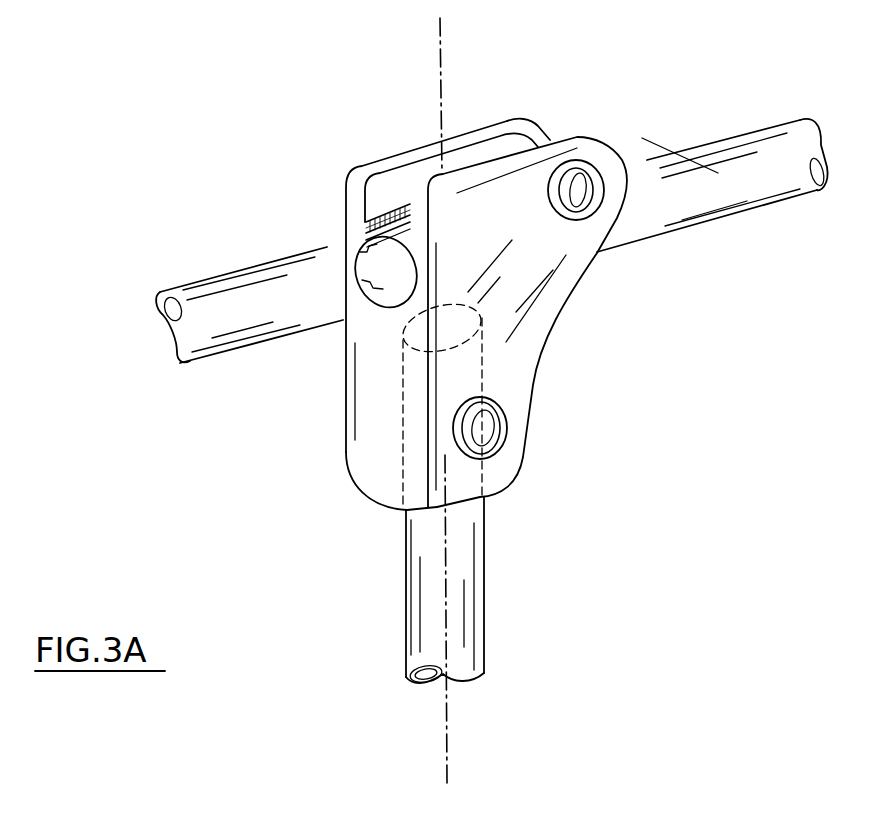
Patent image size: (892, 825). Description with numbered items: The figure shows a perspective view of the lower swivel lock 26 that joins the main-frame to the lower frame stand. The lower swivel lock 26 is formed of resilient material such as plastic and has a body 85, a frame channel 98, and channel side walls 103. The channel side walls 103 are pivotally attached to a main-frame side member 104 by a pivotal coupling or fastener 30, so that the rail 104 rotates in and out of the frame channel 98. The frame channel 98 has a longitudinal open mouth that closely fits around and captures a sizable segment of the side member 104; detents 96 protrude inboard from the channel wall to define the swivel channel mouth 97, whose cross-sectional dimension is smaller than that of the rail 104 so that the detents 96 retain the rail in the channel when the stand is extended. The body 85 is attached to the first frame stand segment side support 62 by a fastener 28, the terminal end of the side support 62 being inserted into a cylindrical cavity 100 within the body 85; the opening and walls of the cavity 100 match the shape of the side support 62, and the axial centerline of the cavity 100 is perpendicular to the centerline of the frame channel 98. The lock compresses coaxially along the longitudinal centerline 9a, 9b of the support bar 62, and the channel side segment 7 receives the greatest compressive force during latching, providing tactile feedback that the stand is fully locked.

The channel side segment 7 is at (380, 288).
The longitudinal centerline 9a is at (438, 62).
The longitudinal centerline 9b is at (447, 753).
The lower swivel lock 26 is at (748, 160).
The fastener 28 is at (585, 213).
The pivotal coupling or fastener 30 is at (507, 410).
The first frame stand segment side support 62 is at (484, 578).
The swivel body 85 is at (522, 352).
The detents 96 is at (367, 227).
The swivel channel mouth 97 is at (370, 247).
The frame channel 98 is at (373, 287).
The cylindrical cavity 100 is at (373, 493).
The channel side walls 103 is at (508, 202).
The main-frame side member 104 is at (748, 160).